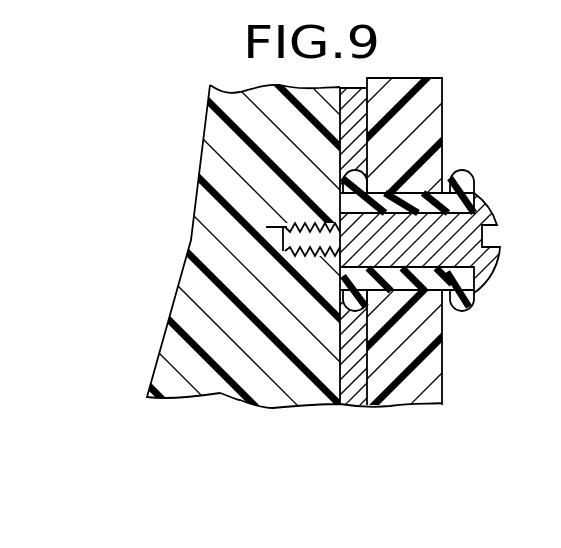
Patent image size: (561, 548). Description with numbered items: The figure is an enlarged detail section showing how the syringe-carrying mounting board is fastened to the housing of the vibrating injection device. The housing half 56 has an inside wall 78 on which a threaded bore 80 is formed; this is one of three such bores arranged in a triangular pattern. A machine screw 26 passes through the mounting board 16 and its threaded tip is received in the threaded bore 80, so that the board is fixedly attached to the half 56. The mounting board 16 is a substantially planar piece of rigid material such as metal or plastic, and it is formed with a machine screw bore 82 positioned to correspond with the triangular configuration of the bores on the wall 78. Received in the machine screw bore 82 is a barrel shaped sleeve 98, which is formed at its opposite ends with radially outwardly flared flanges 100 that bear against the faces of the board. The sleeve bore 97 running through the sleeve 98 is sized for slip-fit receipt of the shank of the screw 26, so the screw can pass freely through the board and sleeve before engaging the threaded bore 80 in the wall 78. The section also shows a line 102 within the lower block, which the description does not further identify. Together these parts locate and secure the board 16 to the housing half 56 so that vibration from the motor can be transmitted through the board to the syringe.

The mounting board 16 is at (443, 92).
The machine screw 26 is at (497, 214).
The housing half 56 is at (222, 396).
The inside wall 78 is at (347, 378).
The threaded bore 80 is at (283, 250).
The machine screw bore 82 is at (418, 203).
The sleeve bore 97 is at (430, 263).
The barrel shaped sleeve 98 is at (475, 296).
The flared flange 100 is at (358, 172).
The interface 102 is at (350, 330).